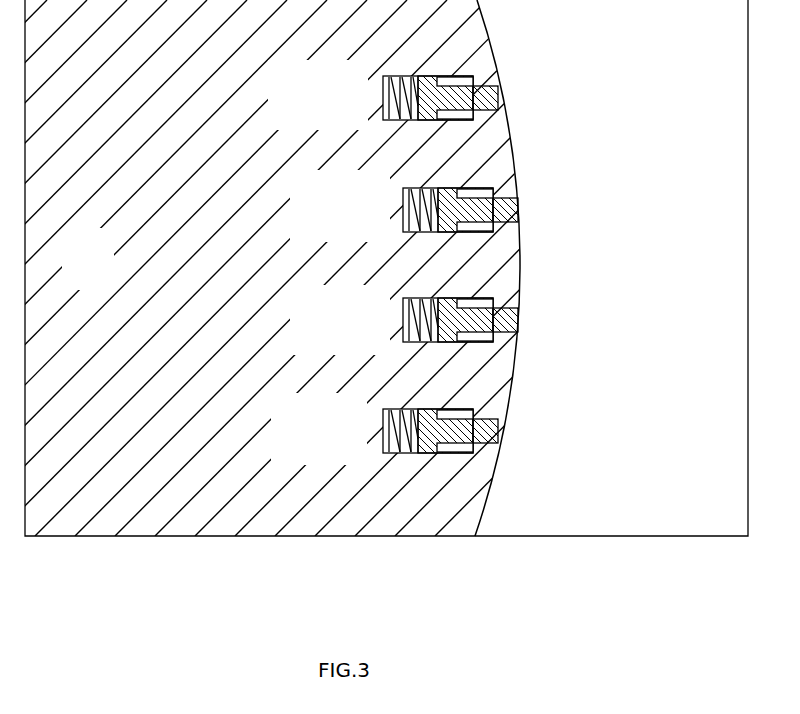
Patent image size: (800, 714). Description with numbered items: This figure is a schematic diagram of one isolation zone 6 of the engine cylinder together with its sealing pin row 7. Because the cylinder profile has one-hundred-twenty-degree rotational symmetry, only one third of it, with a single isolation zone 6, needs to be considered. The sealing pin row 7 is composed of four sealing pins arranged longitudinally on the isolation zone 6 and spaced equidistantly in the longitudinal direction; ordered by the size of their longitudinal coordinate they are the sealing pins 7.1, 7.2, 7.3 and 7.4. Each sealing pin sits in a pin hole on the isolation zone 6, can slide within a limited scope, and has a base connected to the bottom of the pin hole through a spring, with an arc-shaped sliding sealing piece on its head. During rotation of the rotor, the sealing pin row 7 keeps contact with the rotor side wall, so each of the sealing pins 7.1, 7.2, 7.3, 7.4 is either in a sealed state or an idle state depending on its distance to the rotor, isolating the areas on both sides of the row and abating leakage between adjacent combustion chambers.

The isolation zone 6 is at (544, 140).
The sealing pin row 7 is at (296, 263).
The sealing pin 7.1 is at (390, 431).
The sealing pin 7.2 is at (410, 320).
The sealing pin 7.3 is at (410, 206).
The sealing pin 7.4 is at (389, 96).